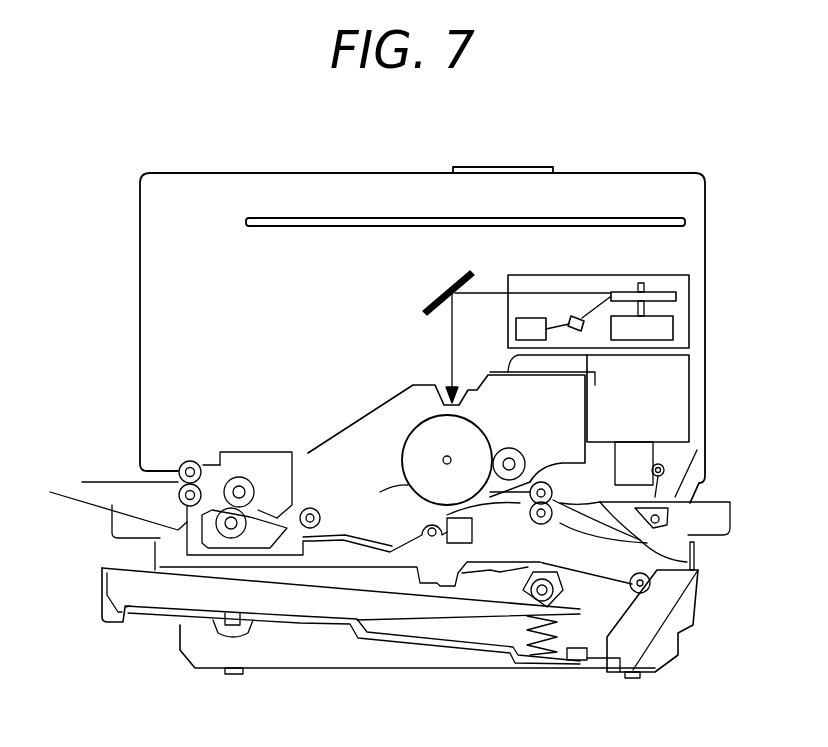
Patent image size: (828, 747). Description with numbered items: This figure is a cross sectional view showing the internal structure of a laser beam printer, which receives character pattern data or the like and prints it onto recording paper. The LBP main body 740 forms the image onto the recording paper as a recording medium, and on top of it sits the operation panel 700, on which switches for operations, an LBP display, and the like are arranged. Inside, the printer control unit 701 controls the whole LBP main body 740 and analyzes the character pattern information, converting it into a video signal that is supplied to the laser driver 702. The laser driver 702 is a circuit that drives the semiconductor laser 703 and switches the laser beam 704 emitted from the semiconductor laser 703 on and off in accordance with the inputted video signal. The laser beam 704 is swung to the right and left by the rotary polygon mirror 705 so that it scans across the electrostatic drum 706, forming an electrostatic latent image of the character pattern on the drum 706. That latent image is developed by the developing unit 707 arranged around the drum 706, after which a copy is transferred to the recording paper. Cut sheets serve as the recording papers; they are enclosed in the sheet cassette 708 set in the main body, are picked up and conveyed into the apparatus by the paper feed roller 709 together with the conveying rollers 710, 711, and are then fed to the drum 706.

The operation panel 700 is at (535, 170).
The LBP main body 740 is at (655, 172).
The printer control unit 701 is at (686, 223).
The laser driver 702 is at (516, 331).
The semiconductor laser 703 is at (583, 331).
The laser beam 704 is at (587, 295).
The rotary polygon mirror 705 is at (676, 296).
The electrostatic drum 706 is at (413, 427).
The developing unit 707 is at (347, 443).
The sheet cassette 708 is at (100, 607).
The paper feed roller 709 is at (518, 597).
The conveying roller 710 is at (647, 588).
The conveying roller 711 is at (695, 552).